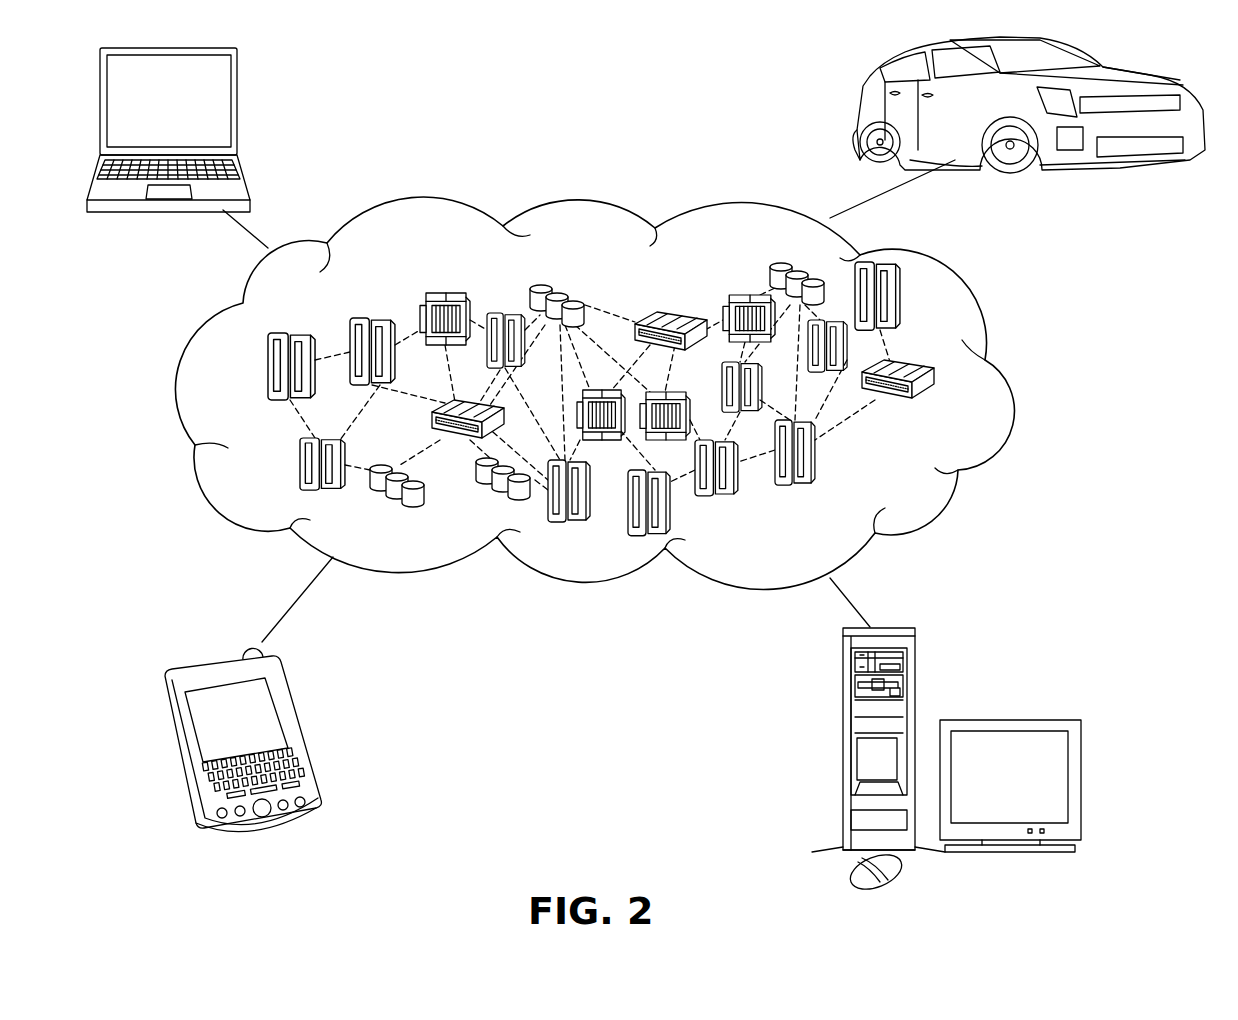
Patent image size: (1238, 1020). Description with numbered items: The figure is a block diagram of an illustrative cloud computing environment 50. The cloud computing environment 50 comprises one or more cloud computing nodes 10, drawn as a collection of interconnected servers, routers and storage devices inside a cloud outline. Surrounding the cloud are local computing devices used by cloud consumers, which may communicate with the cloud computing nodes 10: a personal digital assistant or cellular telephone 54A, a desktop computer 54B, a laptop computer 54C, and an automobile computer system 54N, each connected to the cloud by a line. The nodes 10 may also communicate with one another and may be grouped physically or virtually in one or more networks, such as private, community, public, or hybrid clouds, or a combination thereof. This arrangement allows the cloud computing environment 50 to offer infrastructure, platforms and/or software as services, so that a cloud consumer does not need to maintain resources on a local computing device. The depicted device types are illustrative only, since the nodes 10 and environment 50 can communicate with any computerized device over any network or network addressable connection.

The cloud computing nodes 10 is at (915, 480).
The cloud computing environment 50 is at (1008, 384).
The personal digital assistant or cellular telephone 54A is at (292, 700).
The desktop computer 54B is at (843, 688).
The laptop computer 54C is at (237, 84).
The automobile computer system 54N is at (860, 102).